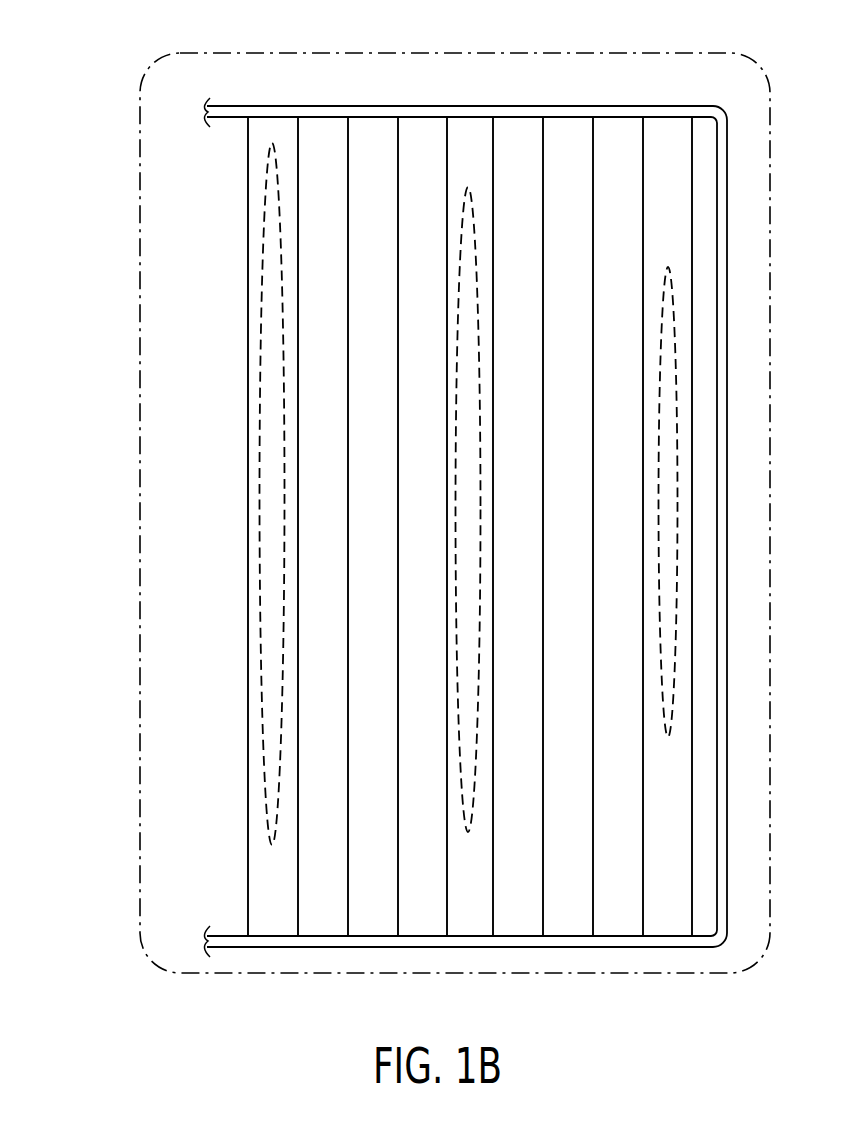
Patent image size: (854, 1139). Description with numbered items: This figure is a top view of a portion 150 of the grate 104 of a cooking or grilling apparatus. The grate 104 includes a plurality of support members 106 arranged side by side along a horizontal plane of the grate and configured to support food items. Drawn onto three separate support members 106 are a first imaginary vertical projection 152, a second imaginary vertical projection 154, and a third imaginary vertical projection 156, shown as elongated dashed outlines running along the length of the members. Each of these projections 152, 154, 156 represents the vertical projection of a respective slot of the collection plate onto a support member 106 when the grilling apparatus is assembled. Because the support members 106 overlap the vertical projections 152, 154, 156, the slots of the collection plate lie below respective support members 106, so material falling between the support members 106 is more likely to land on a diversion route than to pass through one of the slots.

The grate 104 is at (569, 89).
The support members 106 is at (291, 902).
The portion of the grate 150 is at (143, 152).
The first imaginary vertical projection 152 is at (658, 330).
The second imaginary vertical projection 154 is at (447, 258).
The third imaginary vertical projection 156 is at (262, 264).